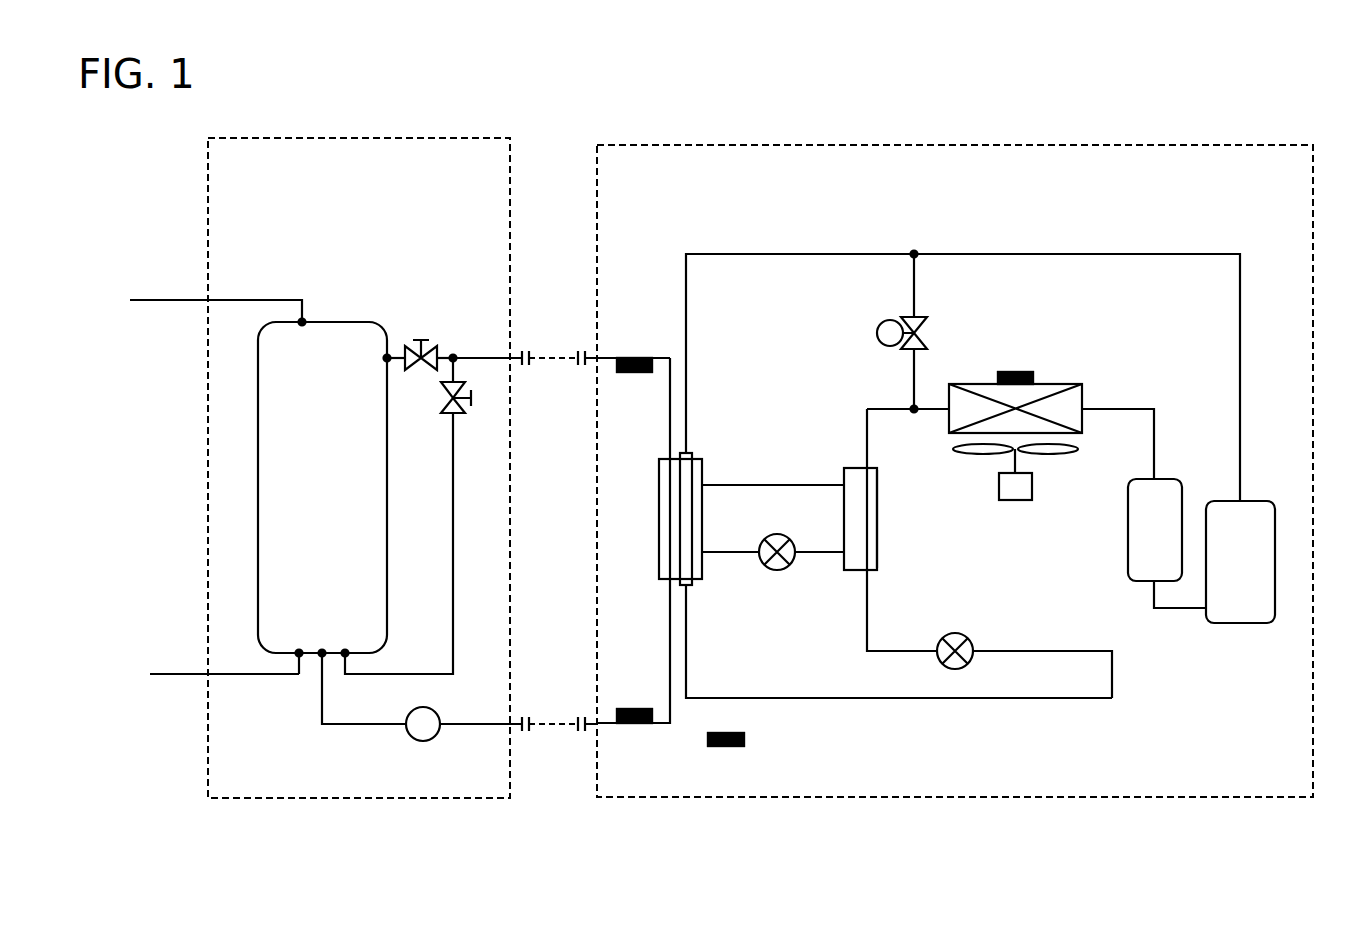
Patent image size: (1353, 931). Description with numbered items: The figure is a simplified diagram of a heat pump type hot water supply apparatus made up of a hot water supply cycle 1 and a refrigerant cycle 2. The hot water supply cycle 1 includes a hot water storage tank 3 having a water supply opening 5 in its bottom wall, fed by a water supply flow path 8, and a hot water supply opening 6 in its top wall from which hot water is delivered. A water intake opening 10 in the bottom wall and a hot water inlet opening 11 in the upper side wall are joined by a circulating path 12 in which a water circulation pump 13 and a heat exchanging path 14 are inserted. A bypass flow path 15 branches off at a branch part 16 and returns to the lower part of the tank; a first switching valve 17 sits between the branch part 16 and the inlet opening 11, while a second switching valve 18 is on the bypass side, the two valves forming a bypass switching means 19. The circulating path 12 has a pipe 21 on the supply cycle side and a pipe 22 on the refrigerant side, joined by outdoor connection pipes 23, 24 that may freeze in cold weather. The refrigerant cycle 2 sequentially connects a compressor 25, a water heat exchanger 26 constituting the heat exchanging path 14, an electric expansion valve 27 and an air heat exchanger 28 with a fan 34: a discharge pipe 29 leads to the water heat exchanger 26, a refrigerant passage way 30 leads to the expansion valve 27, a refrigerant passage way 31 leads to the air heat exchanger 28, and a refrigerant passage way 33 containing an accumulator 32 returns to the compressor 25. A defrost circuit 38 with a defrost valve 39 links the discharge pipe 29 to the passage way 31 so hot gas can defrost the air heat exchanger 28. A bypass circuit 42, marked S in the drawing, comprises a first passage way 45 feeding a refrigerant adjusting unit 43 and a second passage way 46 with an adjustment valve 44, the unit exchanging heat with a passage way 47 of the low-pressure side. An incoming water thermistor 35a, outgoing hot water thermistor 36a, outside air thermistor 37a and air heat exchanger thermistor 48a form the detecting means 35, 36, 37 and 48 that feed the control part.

The hot water supply cycle 1 is at (428, 126).
The refrigerant cycle 2 is at (1168, 133).
The hot water storage tank 3 is at (345, 318).
The water supply opening 5 is at (299, 678).
The hot water supply opening 6 is at (302, 320).
The water supply flow path 8 is at (246, 677).
The water intake opening 10 is at (322, 651).
The hot water inlet opening 11 is at (389, 355).
The circulating path 12 is at (500, 356).
The water circulation pump 13 is at (419, 742).
The heat exchanging path 14 is at (660, 488).
The bypass flow path 15 is at (456, 534).
The branch part 16 is at (456, 356).
The first switching valve 17 is at (428, 345).
The second switching valve 18 is at (468, 406).
The bypass switching means 19 is at (431, 388).
The pipe 21 is at (470, 730).
The pipe 22 is at (661, 728).
The connection pipe 23 is at (548, 730).
The connection pipe 24 is at (553, 355).
The compressor 25 is at (1240, 612).
The water heat exchanger 26 is at (659, 535).
The pressure reducing mechanism 27 is at (956, 670).
The air heat exchanger 28 is at (1070, 383).
The discharge pipe 29 is at (1201, 253).
The refrigerant passage way 30 is at (878, 700).
The refrigerant passage way 31 is at (870, 608).
The accumulator 32 is at (1143, 585).
The refrigerant passage way 33 is at (1153, 408).
The fan 34 is at (1060, 455).
The incoming water temperature detecting means 35 is at (626, 728).
The incoming water thermistor 35a is at (640, 708).
The outgoing hot water temperature detecting means 36 is at (634, 356).
The outgoing hot water thermistor 36a is at (637, 374).
The outside air temperature detecting means 37 is at (731, 752).
The outside air temperature detection thermistor 37a is at (746, 739).
The defrost circuit 38 is at (913, 300).
The defrost valve 39 is at (877, 336).
The bypass circuit 42 is at (781, 484).
The refrigerant adjusting unit 43 is at (878, 516).
The adjustment valve 44 is at (779, 571).
The first passage way 45 is at (730, 484).
The second passage way 46 is at (724, 554).
The passage way 47 is at (868, 551).
The air heat exchanger temperature detecting means 48 is at (1020, 371).
The air heat exchanger thermistor 48a is at (1005, 371).
The compressor S is at (880, 487).